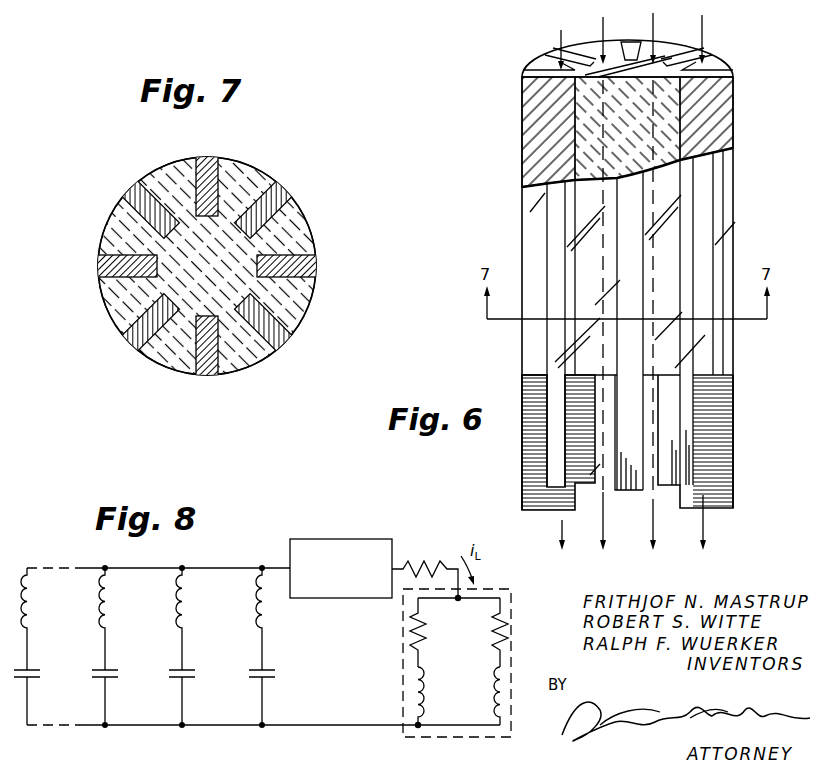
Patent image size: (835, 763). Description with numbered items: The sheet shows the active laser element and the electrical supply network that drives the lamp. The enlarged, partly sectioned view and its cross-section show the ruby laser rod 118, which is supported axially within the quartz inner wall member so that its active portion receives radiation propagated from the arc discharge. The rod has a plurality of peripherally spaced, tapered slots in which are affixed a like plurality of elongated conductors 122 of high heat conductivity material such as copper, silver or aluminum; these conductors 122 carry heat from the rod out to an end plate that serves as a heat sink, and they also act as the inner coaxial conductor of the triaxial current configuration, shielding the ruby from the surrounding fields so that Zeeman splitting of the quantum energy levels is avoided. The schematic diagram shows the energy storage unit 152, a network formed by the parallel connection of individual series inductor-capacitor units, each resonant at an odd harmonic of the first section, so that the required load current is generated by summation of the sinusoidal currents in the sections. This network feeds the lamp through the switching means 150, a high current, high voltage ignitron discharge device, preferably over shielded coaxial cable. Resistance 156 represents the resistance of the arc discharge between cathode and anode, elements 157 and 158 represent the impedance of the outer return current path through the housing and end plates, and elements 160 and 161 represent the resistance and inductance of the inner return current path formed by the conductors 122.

In FIG. 7, the laser rod 118 is at (304, 219).
In FIG. 6, the laser rod 118 is at (646, 140).
In FIG. 6, the elongated conductors 122 is at (521, 124).
In FIG. 8, the switching means 150 is at (340, 540).
In FIG. 8, the energy storage unit 152 is at (25, 562).
In FIG. 8, the resistance 156 is at (443, 564).
In FIG. 8, the outer return path resistance element 157 is at (418, 616).
In FIG. 8, the outer return path inductance element 158 is at (418, 674).
In FIG. 8, the inner return path resistance 160 is at (503, 623).
In FIG. 8, the inner return path inductance 161 is at (500, 678).